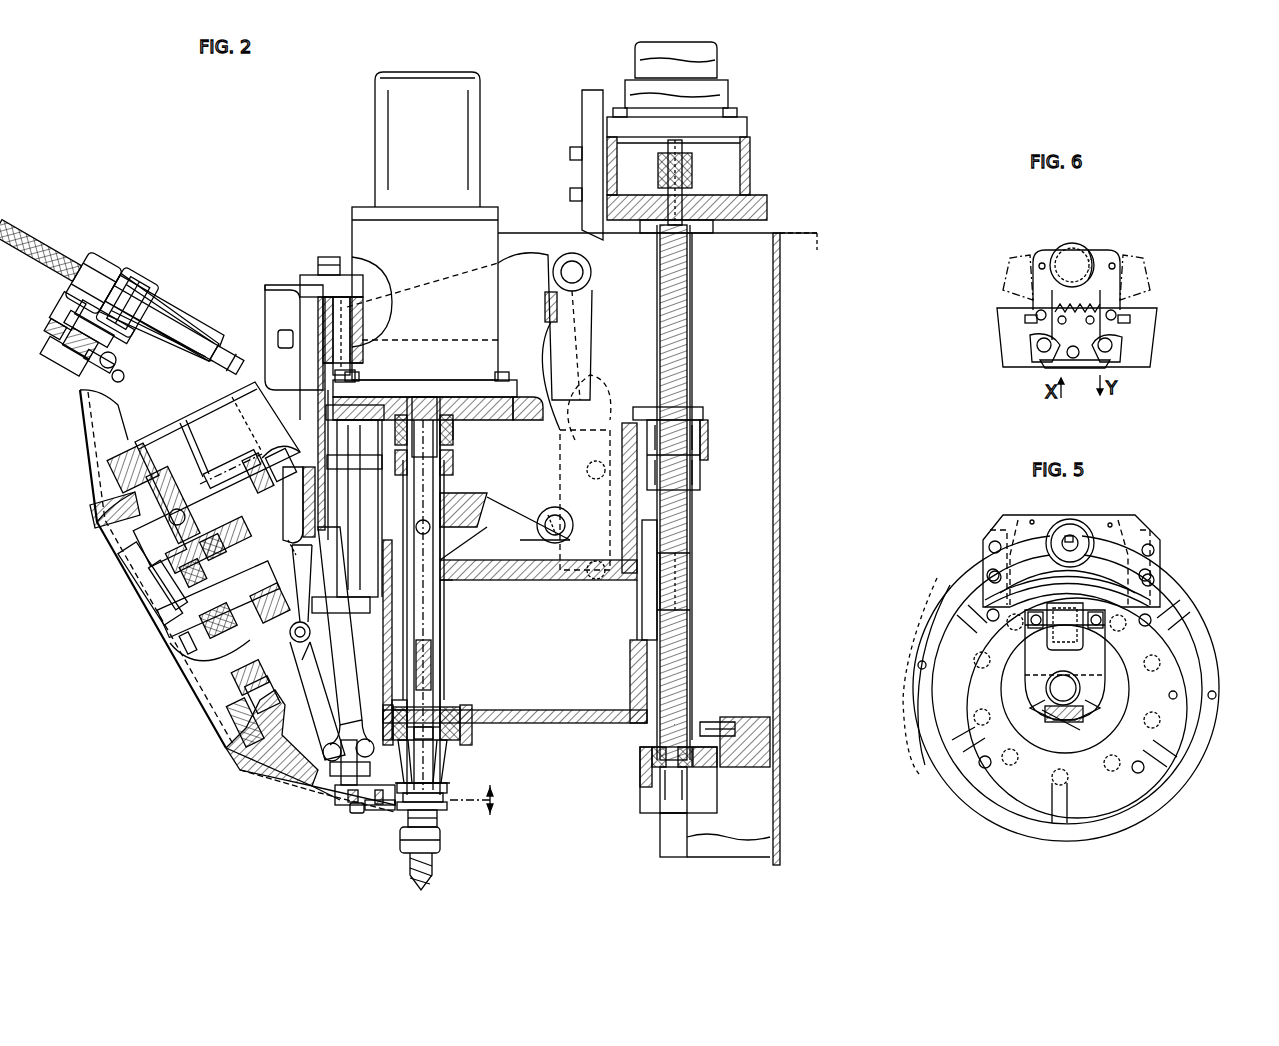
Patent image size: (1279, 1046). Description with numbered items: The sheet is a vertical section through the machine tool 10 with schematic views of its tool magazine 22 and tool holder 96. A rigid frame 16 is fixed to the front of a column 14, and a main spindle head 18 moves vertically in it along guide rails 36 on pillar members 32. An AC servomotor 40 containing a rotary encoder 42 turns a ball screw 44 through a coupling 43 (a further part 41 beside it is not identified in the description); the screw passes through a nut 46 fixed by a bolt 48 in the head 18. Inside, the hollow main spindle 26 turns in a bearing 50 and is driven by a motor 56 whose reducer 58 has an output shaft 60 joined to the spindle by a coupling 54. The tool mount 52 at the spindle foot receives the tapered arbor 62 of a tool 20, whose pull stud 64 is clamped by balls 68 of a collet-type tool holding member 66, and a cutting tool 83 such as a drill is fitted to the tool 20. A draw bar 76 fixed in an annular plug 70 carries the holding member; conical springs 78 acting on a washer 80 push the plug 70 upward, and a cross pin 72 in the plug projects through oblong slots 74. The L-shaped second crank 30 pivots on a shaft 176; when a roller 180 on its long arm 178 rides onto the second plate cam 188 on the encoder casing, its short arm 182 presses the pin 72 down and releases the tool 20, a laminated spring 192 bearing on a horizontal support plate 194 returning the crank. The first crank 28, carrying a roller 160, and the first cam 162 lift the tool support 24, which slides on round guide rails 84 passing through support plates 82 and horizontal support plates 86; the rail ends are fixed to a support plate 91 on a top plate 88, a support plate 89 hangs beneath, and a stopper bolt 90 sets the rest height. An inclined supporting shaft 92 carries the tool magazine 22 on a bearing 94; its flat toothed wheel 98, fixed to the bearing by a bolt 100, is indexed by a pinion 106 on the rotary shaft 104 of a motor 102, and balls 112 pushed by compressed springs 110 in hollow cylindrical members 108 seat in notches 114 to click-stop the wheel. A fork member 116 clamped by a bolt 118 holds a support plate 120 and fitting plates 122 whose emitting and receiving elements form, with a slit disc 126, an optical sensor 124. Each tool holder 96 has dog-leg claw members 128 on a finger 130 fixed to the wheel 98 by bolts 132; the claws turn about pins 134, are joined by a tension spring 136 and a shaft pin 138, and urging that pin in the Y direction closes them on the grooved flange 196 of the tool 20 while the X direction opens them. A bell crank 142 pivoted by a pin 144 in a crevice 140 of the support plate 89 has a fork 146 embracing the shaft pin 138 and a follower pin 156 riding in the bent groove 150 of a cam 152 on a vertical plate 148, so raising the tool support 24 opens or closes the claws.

In FIG. 2, the machine tool 10 is at (350, 178).
In FIG. 2, the column 14 is at (805, 242).
In FIG. 2, the frame 16 is at (560, 233).
In FIG. 2, the main spindle head 18 is at (580, 725).
In FIG. 2, the tool 20 is at (445, 845).
In FIG. 2, the tool magazine 22 is at (97, 554).
In FIG. 5, the tool magazine 22 is at (926, 603).
In FIG. 2, the tool support 24 is at (295, 388).
In FIG. 2, the main spindle 26 is at (438, 622).
In FIG. 2, the first crank 28 is at (505, 257).
In FIG. 2, the second crank 30 is at (528, 490).
In FIG. 2, the pillar member 32 is at (765, 390).
In FIG. 2, the guide rail 36 is at (660, 595).
In FIG. 2, the AC servomotor 40 is at (718, 70).
In FIG. 2, the coupling 41 is at (680, 165).
In FIG. 2, the rotary encoder 42 is at (745, 140).
In FIG. 2, the coupling 43 is at (685, 185).
In FIG. 2, the ball screw 44 is at (675, 310).
In FIG. 2, the nut 46 is at (690, 480).
In FIG. 2, the bolt 48 is at (700, 410).
In FIG. 2, the bearing 50 is at (460, 722).
In FIG. 2, the tool mount 52 is at (447, 770).
In FIG. 2, the coupling 54 is at (447, 452).
In FIG. 2, the motor 56 is at (480, 108).
In FIG. 2, the reducer 58 is at (362, 235).
In FIG. 2, the output shaft 60 is at (432, 410).
In FIG. 2, the arbor 62 is at (440, 752).
In FIG. 2, the pull stud 64 is at (450, 715).
In FIG. 2, the tool holding member 66 is at (442, 708).
In FIG. 2, the balls 68 is at (395, 705).
In FIG. 2, the annular plug 70 is at (460, 556).
In FIG. 2, the pin 72 is at (455, 500).
In FIG. 2, the oblong slots 74 is at (445, 543).
In FIG. 2, the draw bar 76 is at (425, 600).
In FIG. 2, the conical springs 78 is at (440, 690).
In FIG. 2, the washer 80 is at (450, 572).
In FIG. 2, the support plate 82 is at (345, 312).
In FIG. 2, the cutting tool 83 is at (430, 878).
In FIG. 2, the guide rail 84 is at (362, 540).
In FIG. 2, the horizontal support plate 86 is at (365, 512).
In FIG. 2, the top plate 88 is at (285, 290).
In FIG. 2, the support plate 89 is at (358, 608).
In FIG. 2, the stopper bolt 90 is at (360, 292).
In FIG. 2, the support plate 91 is at (320, 265).
In FIG. 2, the supporting shaft 92 is at (185, 620).
In FIG. 5, the supporting shaft 92 is at (1040, 690).
In FIG. 2, the bearing 94 is at (235, 655).
In FIG. 2, the tool holder 96 is at (120, 346).
In FIG. 6, the tool holder 96 is at (1148, 301).
In FIG. 2, the flat toothed wheel 98 is at (240, 708).
In FIG. 5, the flat toothed wheel 98 is at (1102, 570).
In FIG. 2, the bolt 100 is at (297, 636).
In FIG. 2, the motor 102 is at (200, 418).
In FIG. 2, the rotary shaft 104 is at (95, 492).
In FIG. 5, the rotary shaft 104 is at (1058, 538).
In FIG. 2, the pinion 106 is at (118, 463).
In FIG. 5, the pinion 106 is at (1075, 535).
In FIG. 2, the hollow cylindrical members 108 is at (222, 478).
In FIG. 2, the compressed spring 110 is at (245, 462).
In FIG. 2, the balls 112 is at (176, 508).
In FIG. 2, the recessed notches 114 is at (150, 540).
In FIG. 2, the fork member 116 is at (165, 580).
In FIG. 5, the fork member 116 is at (1048, 690).
In FIG. 5, the bolt 118 is at (1060, 710).
In FIG. 2, the support plate 120 is at (150, 570).
In FIG. 5, the support plate 120 is at (1027, 612).
In FIG. 2, the fitting plates 122 is at (140, 555).
In FIG. 5, the fitting plates 122 is at (1090, 633).
In FIG. 2, the optical sensor 124 is at (180, 605).
In FIG. 2, the slit disc 126 is at (235, 690).
In FIG. 6, the claw members 128 is at (1018, 255).
In FIG. 2, the finger 130 is at (265, 766).
In FIG. 6, the finger 130 is at (997, 315).
In FIG. 2, the bolts 132 is at (240, 720).
In FIG. 2, the pins 134 is at (95, 392).
In FIG. 6, the pins 134 is at (1035, 343).
In FIG. 2, the tension spring 136 is at (90, 370).
In FIG. 2, the shaft pin 138 is at (105, 425).
In FIG. 6, the shaft pin 138 is at (1075, 360).
In FIG. 2, the crevice 140 is at (318, 640).
In FIG. 2, the bell crank 142 is at (322, 708).
In FIG. 2, the pin 144 is at (318, 700).
In FIG. 2, the fork 146 is at (322, 742).
In FIG. 2, the vertical plate 148 is at (350, 380).
In FIG. 2, the bent groove 150 is at (287, 520).
In FIG. 2, the cam 152 is at (276, 462).
In FIG. 2, the follower pin 156 is at (290, 540).
In FIG. 2, the roller 160 is at (600, 375).
In FIG. 2, the first cam 162 is at (610, 400).
In FIG. 2, the shaft 176 is at (555, 543).
In FIG. 2, the long arm 178 is at (585, 312).
In FIG. 2, the roller 180 is at (592, 270).
In FIG. 2, the short arm 182 is at (500, 490).
In FIG. 2, the second plate cam 188 is at (588, 95).
In FIG. 2, the laminated spring 192 is at (542, 310).
In FIG. 2, the horizontal support plate 194 is at (455, 385).
In FIG. 2, the grooved flange 196 is at (455, 795).